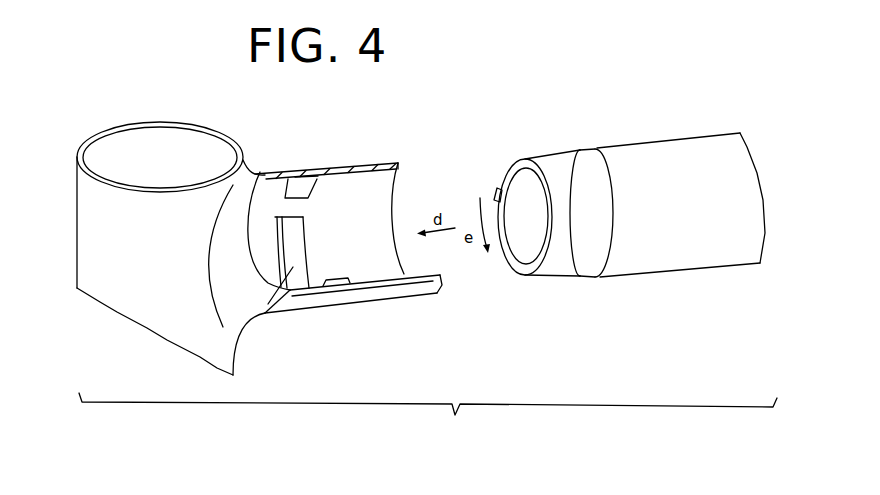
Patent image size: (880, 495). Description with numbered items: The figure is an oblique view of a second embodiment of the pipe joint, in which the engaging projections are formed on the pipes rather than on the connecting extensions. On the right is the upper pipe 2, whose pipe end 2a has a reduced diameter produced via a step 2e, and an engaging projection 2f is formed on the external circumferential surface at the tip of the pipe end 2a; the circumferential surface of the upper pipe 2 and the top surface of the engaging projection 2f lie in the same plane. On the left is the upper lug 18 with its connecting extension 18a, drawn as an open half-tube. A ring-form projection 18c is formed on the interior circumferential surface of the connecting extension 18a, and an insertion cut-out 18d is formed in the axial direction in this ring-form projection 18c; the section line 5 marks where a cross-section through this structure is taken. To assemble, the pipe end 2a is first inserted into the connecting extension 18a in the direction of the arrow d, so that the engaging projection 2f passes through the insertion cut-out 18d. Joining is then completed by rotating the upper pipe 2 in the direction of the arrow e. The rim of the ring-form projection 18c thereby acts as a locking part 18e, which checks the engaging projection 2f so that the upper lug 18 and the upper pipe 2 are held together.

The upper pipe 2 is at (705, 158).
The pipe end 2a is at (632, 163).
The step 2e is at (582, 162).
The engaging projection 2f is at (496, 192).
The section line 5 is at (305, 165).
The upper lug 18 is at (164, 248).
The connecting extension 18a is at (362, 188).
The ring-form projection 18c is at (264, 313).
The insertion cut-out 18d is at (273, 171).
The locking part 18e is at (291, 244).